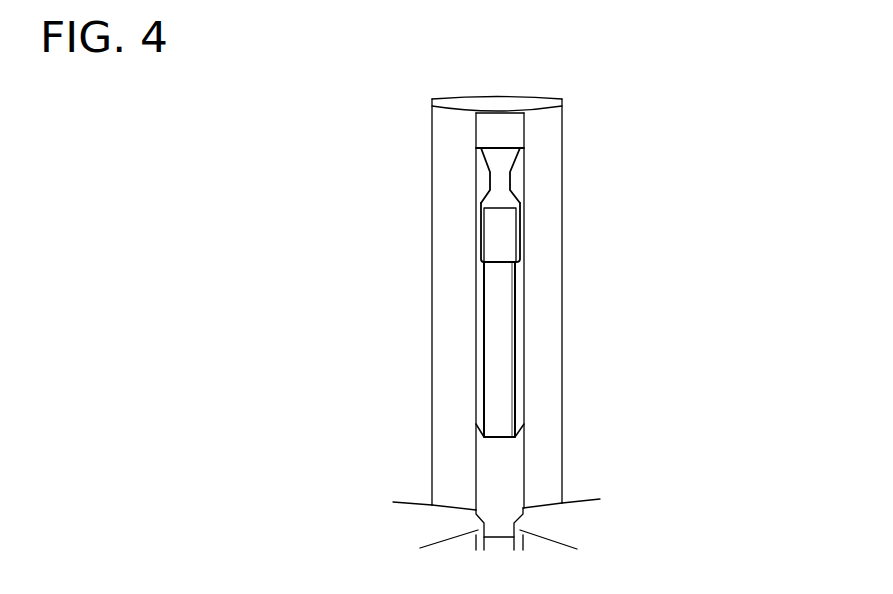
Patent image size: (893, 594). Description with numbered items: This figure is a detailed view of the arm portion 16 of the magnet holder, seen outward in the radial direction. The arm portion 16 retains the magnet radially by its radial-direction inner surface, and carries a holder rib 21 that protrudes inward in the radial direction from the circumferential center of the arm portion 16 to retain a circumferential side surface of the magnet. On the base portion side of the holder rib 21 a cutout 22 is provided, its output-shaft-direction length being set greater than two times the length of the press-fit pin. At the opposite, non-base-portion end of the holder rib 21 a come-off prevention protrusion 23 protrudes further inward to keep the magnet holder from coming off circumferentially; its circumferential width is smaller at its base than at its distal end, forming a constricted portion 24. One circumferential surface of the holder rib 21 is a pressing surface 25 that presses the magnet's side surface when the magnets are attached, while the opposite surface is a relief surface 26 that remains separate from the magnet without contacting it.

The arm portion 16 is at (562, 100).
The holder rib 21 is at (500, 306).
The cutout 22 is at (493, 473).
The come-off prevention protrusion 23 is at (500, 232).
The constricted portion 24 is at (487, 179).
The pressing surface 25 is at (480, 327).
The relief surface 26 is at (520, 323).